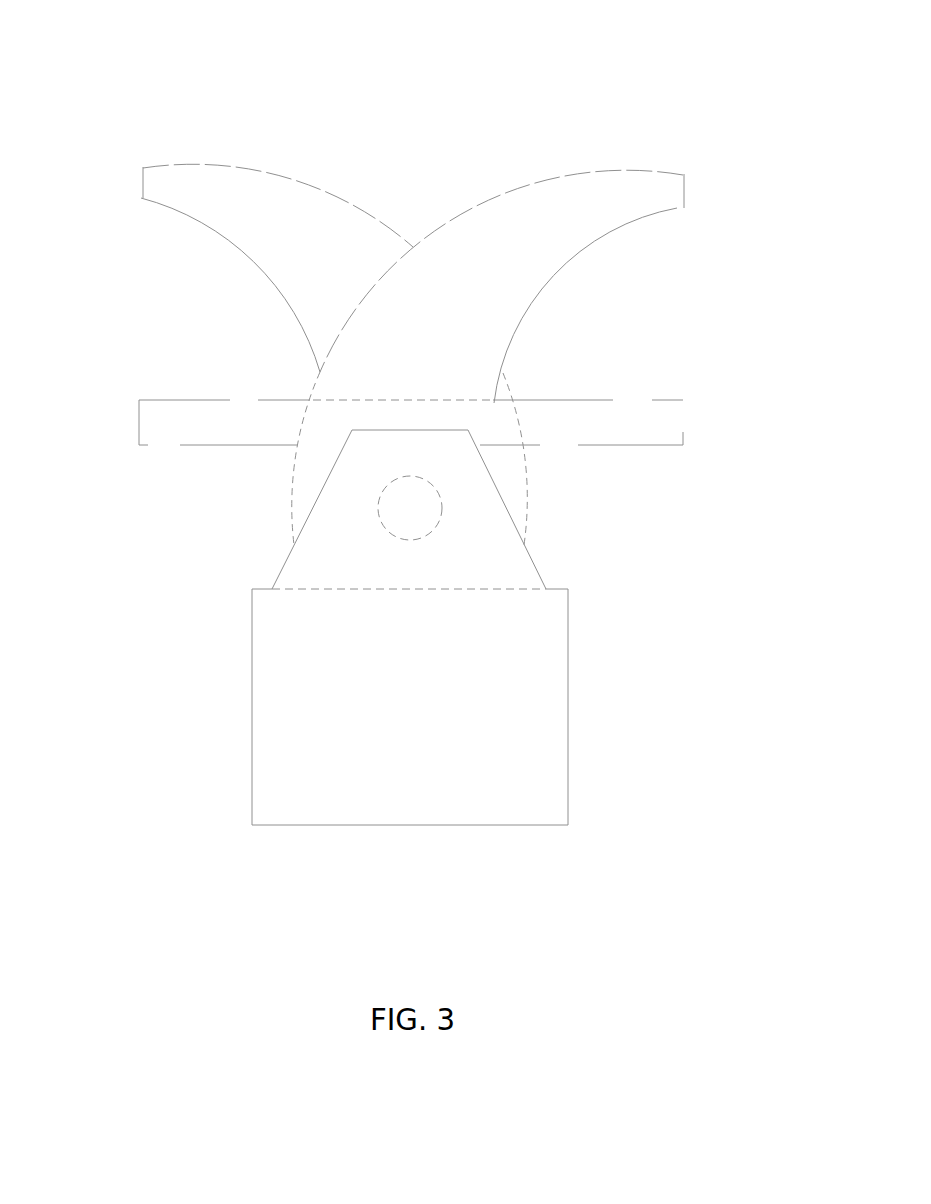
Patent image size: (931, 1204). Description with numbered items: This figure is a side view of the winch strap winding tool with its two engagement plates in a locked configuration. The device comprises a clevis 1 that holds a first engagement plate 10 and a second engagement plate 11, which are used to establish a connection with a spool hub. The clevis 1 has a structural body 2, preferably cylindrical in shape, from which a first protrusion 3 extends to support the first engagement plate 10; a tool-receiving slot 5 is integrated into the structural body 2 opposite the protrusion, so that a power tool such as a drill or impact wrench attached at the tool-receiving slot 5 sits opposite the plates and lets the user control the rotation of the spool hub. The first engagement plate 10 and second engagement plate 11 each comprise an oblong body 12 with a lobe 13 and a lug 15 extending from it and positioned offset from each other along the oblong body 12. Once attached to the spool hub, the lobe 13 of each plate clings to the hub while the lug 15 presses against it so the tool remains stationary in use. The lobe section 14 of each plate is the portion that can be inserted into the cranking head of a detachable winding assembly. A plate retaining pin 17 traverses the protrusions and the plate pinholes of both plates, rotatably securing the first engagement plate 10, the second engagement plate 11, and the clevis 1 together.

The clevis 1 is at (411, 634).
The structural body 2 is at (268, 772).
The first protrusion 3 is at (343, 578).
The tool-receiving slot 5 is at (433, 844).
The first engagement plate 10 is at (583, 120).
The second engagement plate 11 is at (243, 125).
The oblong body 12 is at (360, 212).
The lobe 13 is at (138, 192).
The lobe section 14 is at (517, 312).
The lug 15 is at (136, 428).
The plate retaining pin 17 is at (423, 504).